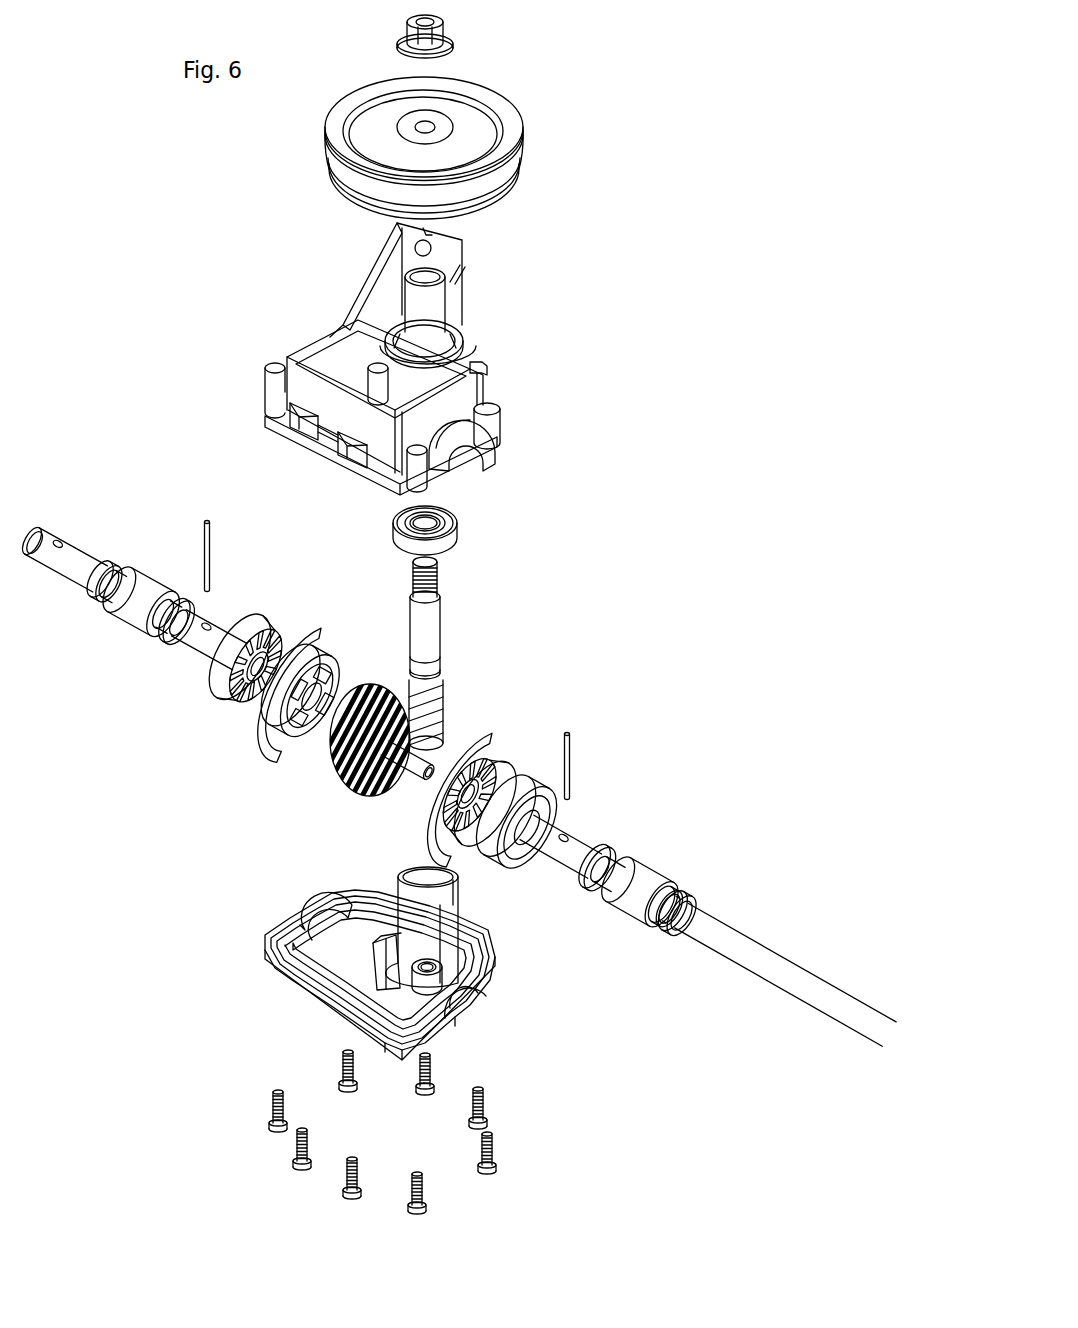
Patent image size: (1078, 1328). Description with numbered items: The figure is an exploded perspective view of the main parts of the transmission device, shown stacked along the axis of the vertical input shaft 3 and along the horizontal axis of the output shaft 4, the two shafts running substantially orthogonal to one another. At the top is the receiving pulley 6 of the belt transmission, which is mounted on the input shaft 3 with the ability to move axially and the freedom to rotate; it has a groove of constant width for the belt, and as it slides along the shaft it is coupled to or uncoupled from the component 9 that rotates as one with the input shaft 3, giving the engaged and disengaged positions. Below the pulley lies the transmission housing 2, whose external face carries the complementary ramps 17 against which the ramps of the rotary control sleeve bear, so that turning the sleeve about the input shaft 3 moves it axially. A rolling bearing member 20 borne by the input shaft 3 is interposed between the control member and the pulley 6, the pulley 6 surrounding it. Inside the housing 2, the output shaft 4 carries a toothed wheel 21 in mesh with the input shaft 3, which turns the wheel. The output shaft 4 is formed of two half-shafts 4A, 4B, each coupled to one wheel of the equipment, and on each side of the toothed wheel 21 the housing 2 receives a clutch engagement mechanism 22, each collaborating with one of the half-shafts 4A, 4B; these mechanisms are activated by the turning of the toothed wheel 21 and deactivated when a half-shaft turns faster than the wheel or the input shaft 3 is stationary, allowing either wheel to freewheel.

The component 9 is at (507, 115).
The receiving pulley 6 is at (505, 180).
The complementary ramps 17 is at (462, 323).
The transmission housing 2 is at (455, 375).
The rolling bearing member 20 is at (462, 525).
The input shaft 3 is at (432, 640).
The toothed wheel 21 is at (335, 780).
The clutch engagement mechanism 22 is at (282, 615).
The output shaft 4 is at (458, 776).
The half-shaft 4A is at (728, 940).
The half-shaft 4B is at (77, 557).